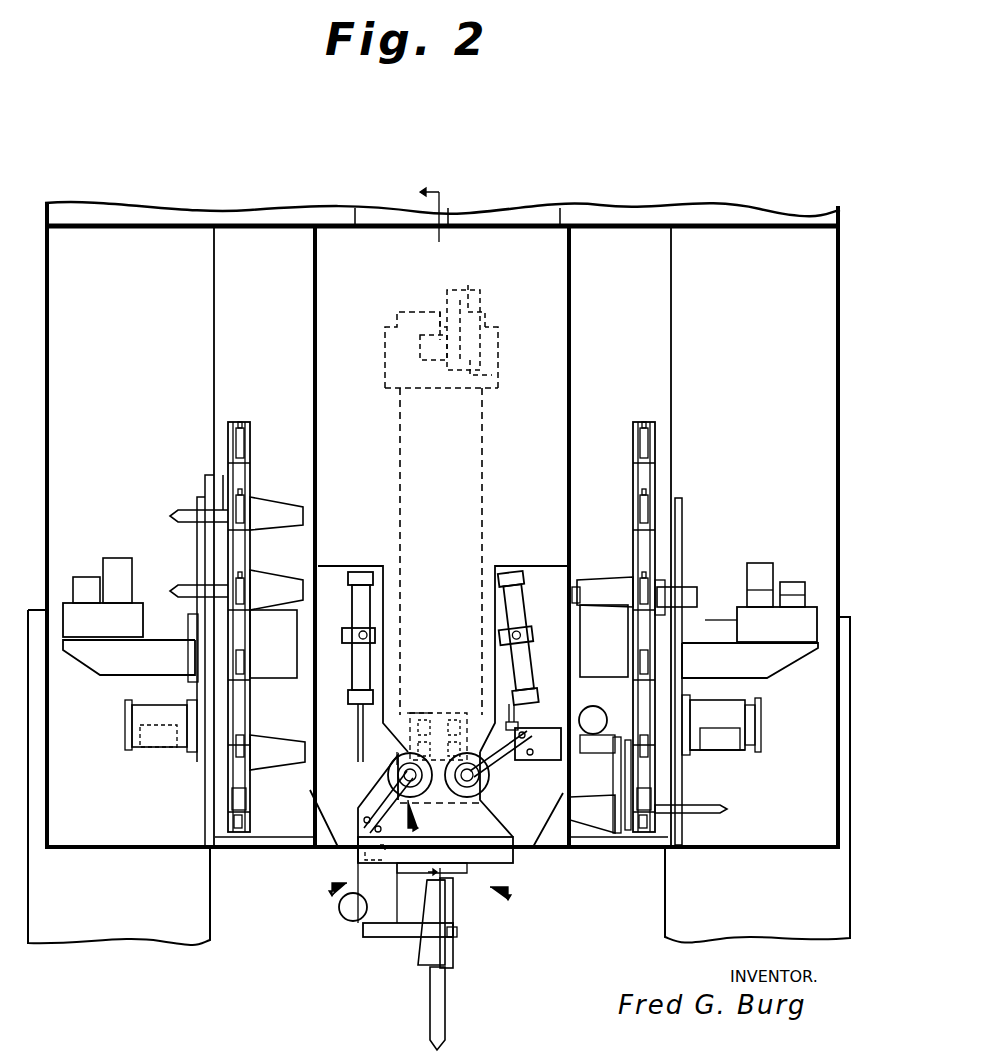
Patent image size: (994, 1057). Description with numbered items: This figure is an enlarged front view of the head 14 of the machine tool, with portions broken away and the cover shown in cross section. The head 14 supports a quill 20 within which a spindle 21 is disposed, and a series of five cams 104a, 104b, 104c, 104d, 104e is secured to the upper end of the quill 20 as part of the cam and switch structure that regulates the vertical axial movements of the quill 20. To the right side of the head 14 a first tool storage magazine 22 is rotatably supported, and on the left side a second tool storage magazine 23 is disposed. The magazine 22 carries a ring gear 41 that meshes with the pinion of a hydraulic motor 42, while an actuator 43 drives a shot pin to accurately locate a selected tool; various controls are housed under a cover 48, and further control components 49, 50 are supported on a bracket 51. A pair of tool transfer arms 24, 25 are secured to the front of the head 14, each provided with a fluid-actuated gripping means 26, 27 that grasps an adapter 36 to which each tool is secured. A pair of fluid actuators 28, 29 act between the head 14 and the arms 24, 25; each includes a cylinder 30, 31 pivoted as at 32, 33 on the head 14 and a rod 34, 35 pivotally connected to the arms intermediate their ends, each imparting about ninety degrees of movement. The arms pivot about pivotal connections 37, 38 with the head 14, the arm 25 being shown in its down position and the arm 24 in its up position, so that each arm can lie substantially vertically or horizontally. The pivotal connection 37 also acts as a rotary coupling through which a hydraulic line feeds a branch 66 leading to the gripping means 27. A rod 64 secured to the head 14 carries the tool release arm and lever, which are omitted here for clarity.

The head 14 is at (529, 494).
The quill 20 is at (482, 433).
The spindle 21 is at (413, 872).
The first tool storage magazine 22 is at (643, 552).
The second tool storage magazine 23 is at (242, 471).
The tool transfer arm 24 is at (546, 767).
The tool transfer arm 25 is at (360, 806).
The gripping means 26 is at (615, 782).
The gripping means 27 is at (400, 941).
The fluid actuator 28 is at (514, 667).
The fluid actuator 29 is at (360, 682).
The cylinder 30 is at (525, 612).
The cylinder 31 is at (352, 612).
The pivot 32 is at (519, 645).
The pivot 33 is at (362, 638).
The rod 34 is at (516, 724).
The rod 35 is at (358, 733).
The adapter 36 is at (259, 590).
The pivotal connection 37 is at (404, 760).
The pivotal connection 38 is at (467, 713).
The ring gear 41 is at (665, 494).
The hydraulic motor 42 is at (720, 717).
The actuator 43 is at (696, 758).
The cover 48 is at (683, 572).
The control component 49 is at (789, 592).
The control component 50 is at (760, 570).
The bracket 51 is at (778, 660).
The rod 64 is at (281, 740).
The branch 66 is at (388, 802).
The cam 104a is at (473, 350).
The cam 104b is at (478, 378).
The cam 104c is at (470, 277).
The cam 104d is at (437, 302).
The cam 104e is at (422, 367).